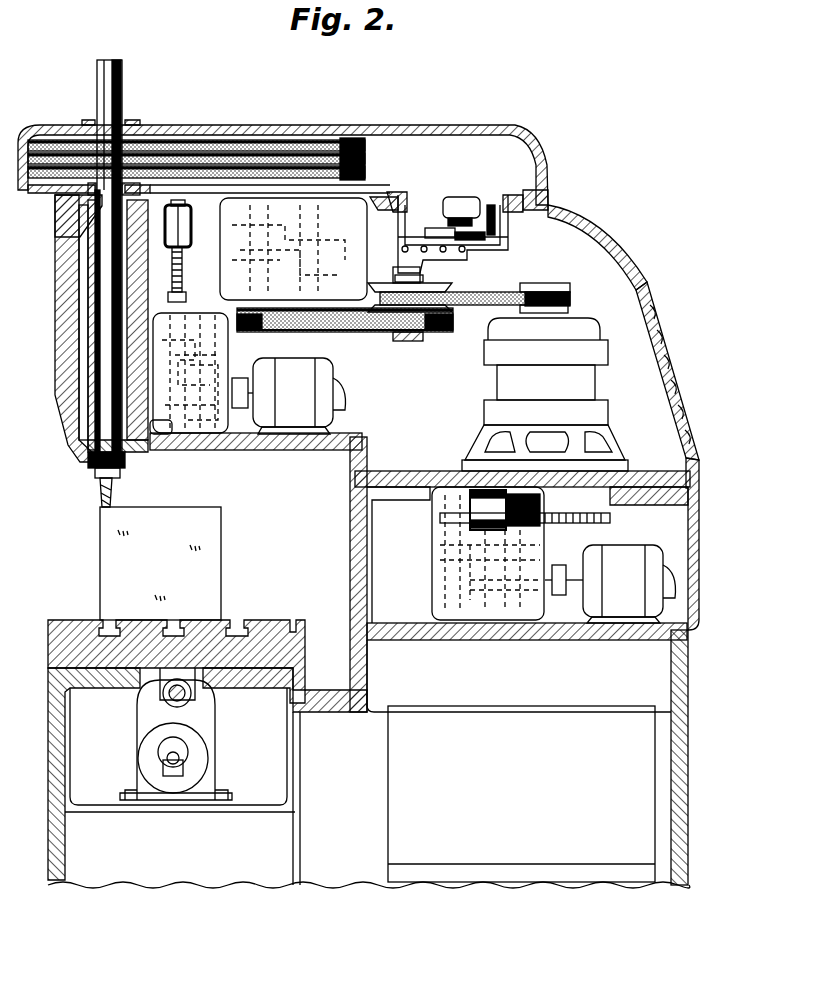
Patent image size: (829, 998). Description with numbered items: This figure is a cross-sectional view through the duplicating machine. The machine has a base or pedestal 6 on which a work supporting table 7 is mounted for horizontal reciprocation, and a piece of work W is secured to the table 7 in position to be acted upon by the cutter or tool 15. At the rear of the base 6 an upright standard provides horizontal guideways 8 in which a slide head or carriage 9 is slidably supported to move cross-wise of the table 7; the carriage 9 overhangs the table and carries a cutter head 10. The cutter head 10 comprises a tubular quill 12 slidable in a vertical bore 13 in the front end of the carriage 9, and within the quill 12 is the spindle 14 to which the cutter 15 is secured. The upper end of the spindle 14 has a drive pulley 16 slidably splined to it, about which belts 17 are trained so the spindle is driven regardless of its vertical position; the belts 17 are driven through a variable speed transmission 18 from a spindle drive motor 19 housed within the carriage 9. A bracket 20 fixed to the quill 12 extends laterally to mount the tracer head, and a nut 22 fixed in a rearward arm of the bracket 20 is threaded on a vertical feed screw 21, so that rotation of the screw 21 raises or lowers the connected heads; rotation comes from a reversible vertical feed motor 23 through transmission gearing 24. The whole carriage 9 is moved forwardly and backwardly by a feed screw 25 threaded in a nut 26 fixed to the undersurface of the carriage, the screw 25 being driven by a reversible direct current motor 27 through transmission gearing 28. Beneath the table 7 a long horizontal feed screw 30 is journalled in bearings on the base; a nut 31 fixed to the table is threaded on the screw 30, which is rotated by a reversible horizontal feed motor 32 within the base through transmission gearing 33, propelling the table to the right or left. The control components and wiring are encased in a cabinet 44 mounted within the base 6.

The base 6 is at (698, 740).
The work supporting table 7 is at (75, 618).
The horizontal guideways 8 is at (343, 560).
The slide head 9 is at (625, 250).
The cutter head 10 is at (62, 378).
The tubular quill 12 is at (80, 247).
The vertical bore 13 is at (80, 305).
The spindle 14 is at (105, 265).
The cutter 15 is at (113, 495).
The drive pulley 16 is at (166, 140).
The belts 17 is at (232, 168).
The variable speed transmission 18 is at (383, 339).
The spindle drive motor 19 is at (499, 391).
The bracket 20 is at (60, 220).
The feed screw 21 is at (185, 275).
The nut 22 is at (190, 235).
The vertical feed motor 23 is at (305, 370).
The transmission gearing 24 is at (220, 441).
The feed screw 25 is at (590, 516).
The nut 26 is at (535, 502).
The direct current reversible motor 27 is at (616, 602).
The transmission gearing 28 is at (489, 612).
The horizontal feed screw 30 is at (190, 693).
The nut 31 is at (160, 702).
The horizontal feed motor 32 is at (206, 775).
The transmission gearing 33 is at (220, 737).
The cabinet 44 is at (545, 735).
The work W is at (212, 583).